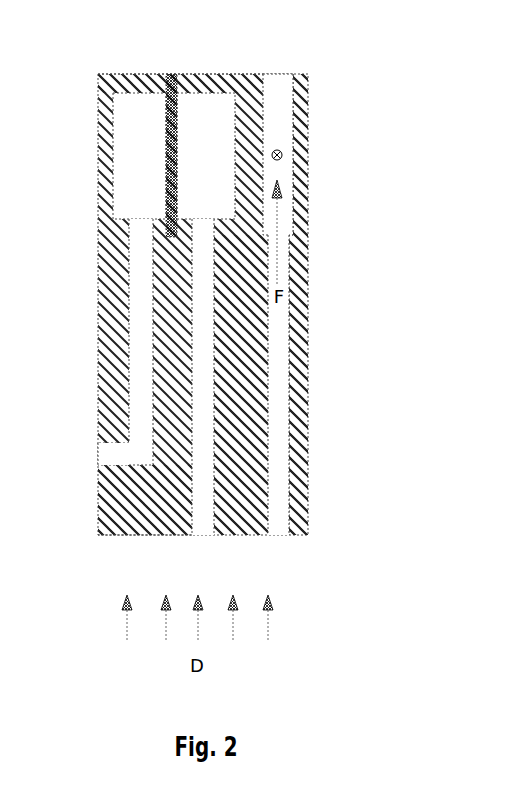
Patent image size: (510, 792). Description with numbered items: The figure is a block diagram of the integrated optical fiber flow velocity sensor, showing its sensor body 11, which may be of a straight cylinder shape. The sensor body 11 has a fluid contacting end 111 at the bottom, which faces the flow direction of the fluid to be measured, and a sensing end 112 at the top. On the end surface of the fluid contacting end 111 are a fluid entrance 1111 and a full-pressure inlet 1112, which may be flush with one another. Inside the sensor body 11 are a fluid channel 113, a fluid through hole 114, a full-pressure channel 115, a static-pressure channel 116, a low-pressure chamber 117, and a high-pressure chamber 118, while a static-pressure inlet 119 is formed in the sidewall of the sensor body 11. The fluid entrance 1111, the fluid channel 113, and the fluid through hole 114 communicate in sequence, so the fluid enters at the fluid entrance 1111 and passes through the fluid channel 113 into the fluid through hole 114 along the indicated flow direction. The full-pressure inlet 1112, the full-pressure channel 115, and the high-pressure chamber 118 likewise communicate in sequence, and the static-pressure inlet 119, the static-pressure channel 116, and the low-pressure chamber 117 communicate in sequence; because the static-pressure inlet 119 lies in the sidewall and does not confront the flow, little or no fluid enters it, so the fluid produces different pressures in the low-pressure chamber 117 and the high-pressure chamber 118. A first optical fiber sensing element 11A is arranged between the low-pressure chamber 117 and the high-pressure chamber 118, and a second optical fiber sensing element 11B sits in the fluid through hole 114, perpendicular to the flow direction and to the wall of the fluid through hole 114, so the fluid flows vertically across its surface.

The sensor body 11 is at (108, 272).
The fluid contacting end 111 is at (133, 535).
The sensing end 112 is at (113, 73).
The fluid channel 113 is at (282, 388).
The fluid through hole 114 is at (281, 93).
The full-pressure channel 115 is at (258, 318).
The static-pressure channel 116 is at (138, 360).
The low-pressure chamber 117 is at (142, 120).
The high-pressure chamber 118 is at (217, 120).
The static-pressure inlet 119 is at (98, 460).
The fluid entrance 1111 is at (277, 535).
The full-pressure inlet 1112 is at (200, 535).
The first optical fiber sensing element 11A is at (177, 148).
The second optical fiber sensing element 11B is at (293, 140).